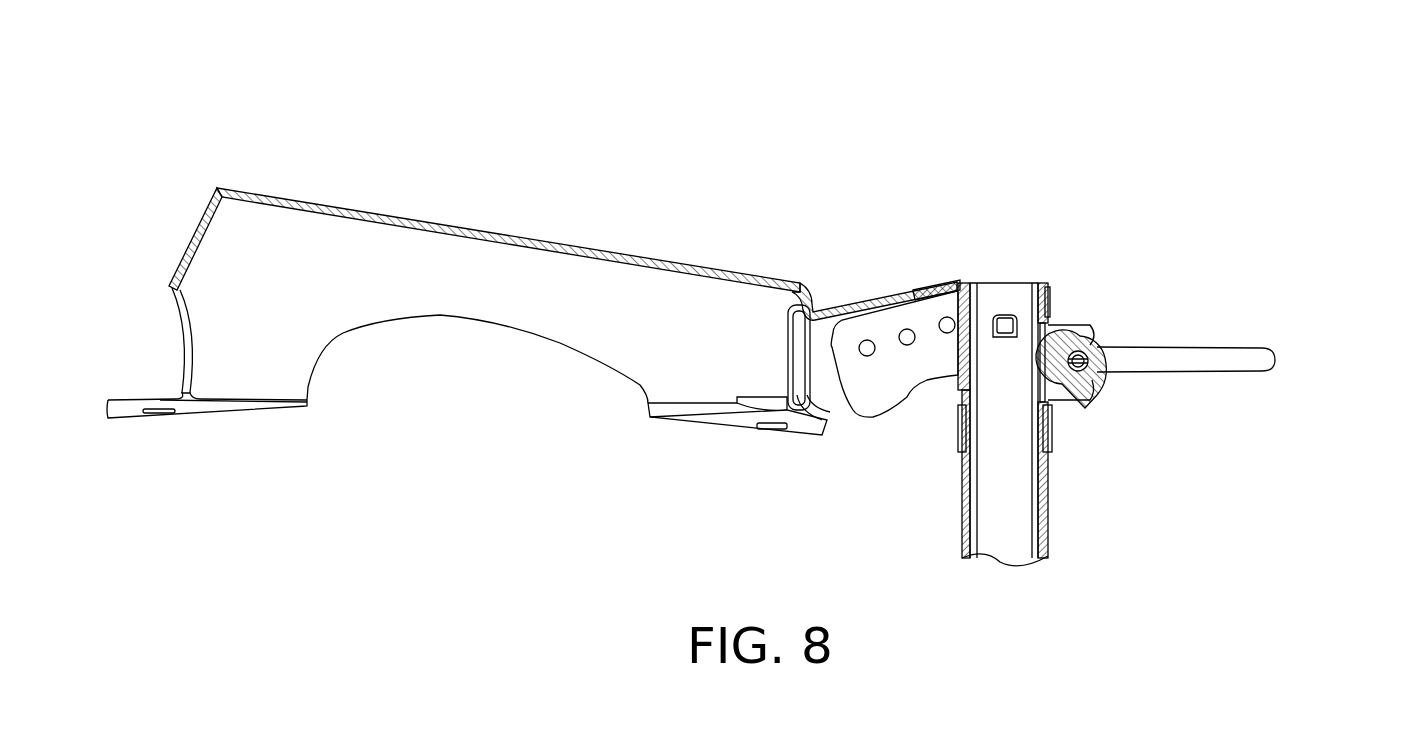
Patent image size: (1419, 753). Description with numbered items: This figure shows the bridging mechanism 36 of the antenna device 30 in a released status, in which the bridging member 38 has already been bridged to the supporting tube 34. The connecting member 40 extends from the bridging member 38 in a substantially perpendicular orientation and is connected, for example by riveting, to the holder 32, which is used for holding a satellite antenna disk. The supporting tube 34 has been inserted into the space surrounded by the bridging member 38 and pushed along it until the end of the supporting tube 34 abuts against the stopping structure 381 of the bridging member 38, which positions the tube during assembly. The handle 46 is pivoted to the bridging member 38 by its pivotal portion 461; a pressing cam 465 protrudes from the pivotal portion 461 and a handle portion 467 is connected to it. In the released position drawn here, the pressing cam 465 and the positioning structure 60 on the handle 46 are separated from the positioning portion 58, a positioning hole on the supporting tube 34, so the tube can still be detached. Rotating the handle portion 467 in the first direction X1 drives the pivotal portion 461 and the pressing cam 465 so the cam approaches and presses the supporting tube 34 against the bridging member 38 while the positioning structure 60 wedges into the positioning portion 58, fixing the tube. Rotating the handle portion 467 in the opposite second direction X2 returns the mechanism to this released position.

The antenna device 30 is at (593, 113).
The holder 32 is at (450, 250).
The supporting tube 34 is at (1022, 533).
The bridging mechanism 36 is at (1113, 200).
The bridging member 38 is at (1053, 293).
The stopping structure 381 is at (973, 277).
The connecting member 40 is at (875, 405).
The handle 46 is at (1253, 318).
The pivotal portion 461 is at (1085, 335).
The pressing cam 465 is at (1092, 380).
The handle portion 467 is at (1202, 357).
The positioning portion 58 is at (1038, 382).
The positioning structure 60 is at (1072, 407).
The first direction X1 is at (1300, 327).
The second direction X2 is at (1368, 325).